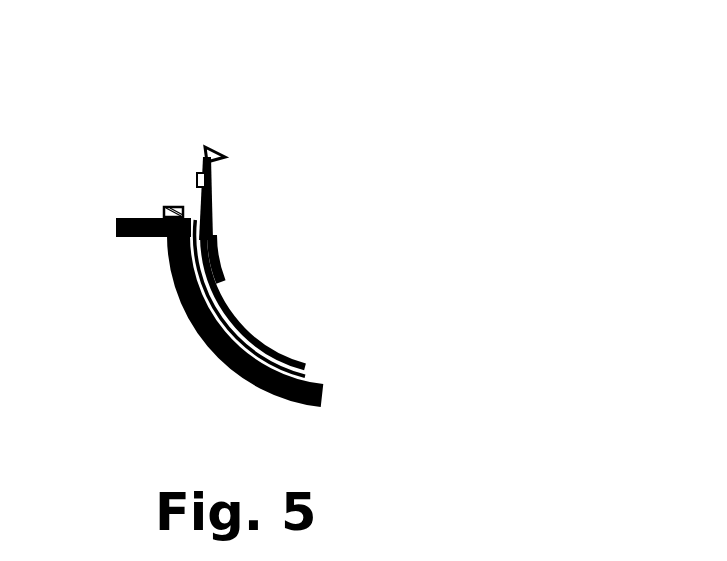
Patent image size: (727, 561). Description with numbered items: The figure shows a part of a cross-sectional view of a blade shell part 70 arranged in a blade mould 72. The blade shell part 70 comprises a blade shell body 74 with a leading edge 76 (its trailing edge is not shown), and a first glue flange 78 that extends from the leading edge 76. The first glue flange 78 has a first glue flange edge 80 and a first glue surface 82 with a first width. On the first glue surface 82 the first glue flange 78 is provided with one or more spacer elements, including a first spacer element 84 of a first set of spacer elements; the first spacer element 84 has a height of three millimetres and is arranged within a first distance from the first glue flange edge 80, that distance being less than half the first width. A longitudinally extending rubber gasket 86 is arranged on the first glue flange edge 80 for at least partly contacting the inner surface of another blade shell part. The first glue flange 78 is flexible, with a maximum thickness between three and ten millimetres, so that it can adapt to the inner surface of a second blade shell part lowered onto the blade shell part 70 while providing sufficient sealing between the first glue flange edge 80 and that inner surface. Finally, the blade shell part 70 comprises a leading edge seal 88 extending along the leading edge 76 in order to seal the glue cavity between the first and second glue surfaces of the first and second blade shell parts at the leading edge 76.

The blade shell part 70 is at (370, 52).
The blade mould 72 is at (140, 237).
The blade shell body 74 is at (240, 338).
The leading edge 76 is at (210, 227).
The first glue flange 78 is at (210, 200).
The first glue flange edge 80 is at (210, 163).
The first glue surface 82 is at (197, 190).
The first spacer element 84 is at (200, 178).
The rubber gasket 86 is at (225, 157).
The leading edge seal 88 is at (167, 210).